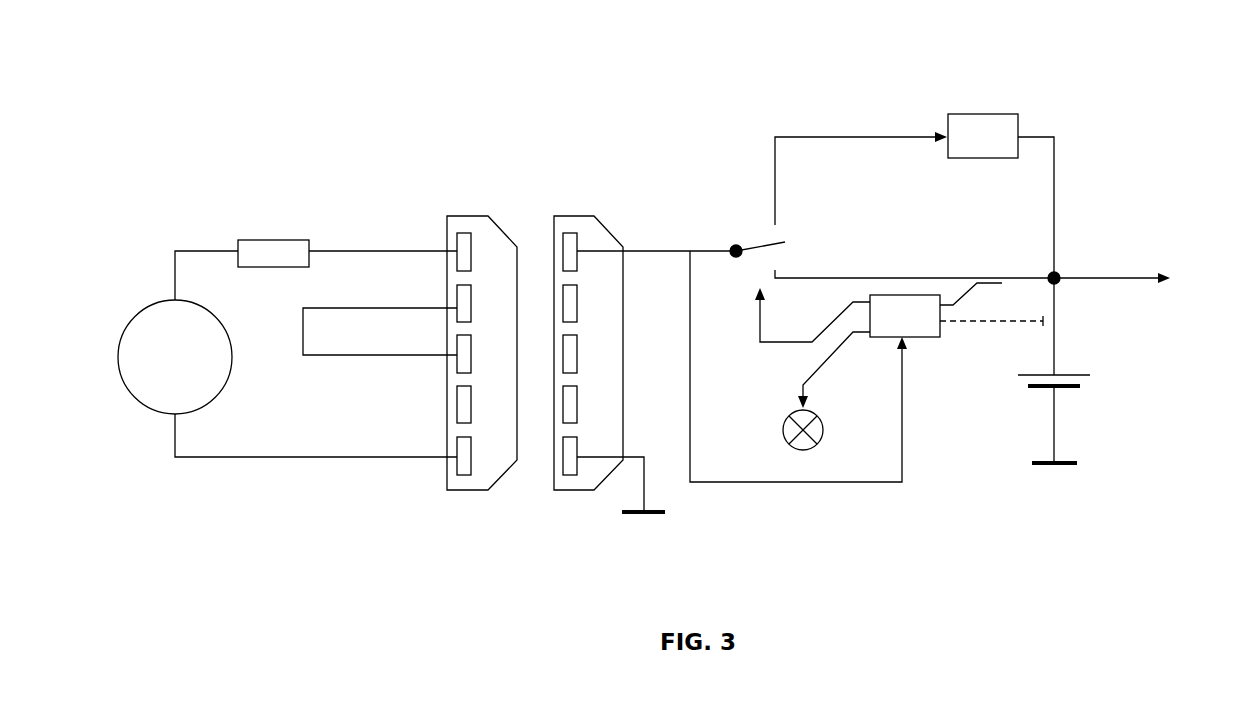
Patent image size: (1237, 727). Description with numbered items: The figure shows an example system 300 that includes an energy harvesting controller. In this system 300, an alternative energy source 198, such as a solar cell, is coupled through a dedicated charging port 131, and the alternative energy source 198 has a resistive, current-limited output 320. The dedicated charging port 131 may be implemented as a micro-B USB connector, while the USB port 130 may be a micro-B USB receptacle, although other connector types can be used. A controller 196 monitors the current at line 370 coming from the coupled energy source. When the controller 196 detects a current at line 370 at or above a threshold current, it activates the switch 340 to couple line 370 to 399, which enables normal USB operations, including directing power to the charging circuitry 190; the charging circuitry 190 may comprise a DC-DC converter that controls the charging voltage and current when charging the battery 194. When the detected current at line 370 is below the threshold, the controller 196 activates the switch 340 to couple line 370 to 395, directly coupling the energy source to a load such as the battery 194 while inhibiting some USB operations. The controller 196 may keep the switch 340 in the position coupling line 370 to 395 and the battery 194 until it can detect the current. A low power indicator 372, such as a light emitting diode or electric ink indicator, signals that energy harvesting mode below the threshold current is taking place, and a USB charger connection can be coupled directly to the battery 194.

The system 300 is at (699, 53).
The alternative energy source 198 is at (159, 366).
The resistive output 320 is at (257, 262).
The dedicated charging port 131 is at (482, 353).
The USB port 130 is at (588, 353).
The line 370 is at (704, 250).
The switch 340 is at (741, 237).
The normal USB circuitry path 399 is at (776, 179).
The direct load path 395 is at (862, 276).
The charging circuitry 190 is at (983, 136).
The controller 196 is at (899, 345).
The low power indicator 372 is at (788, 421).
The battery 194 is at (1083, 387).